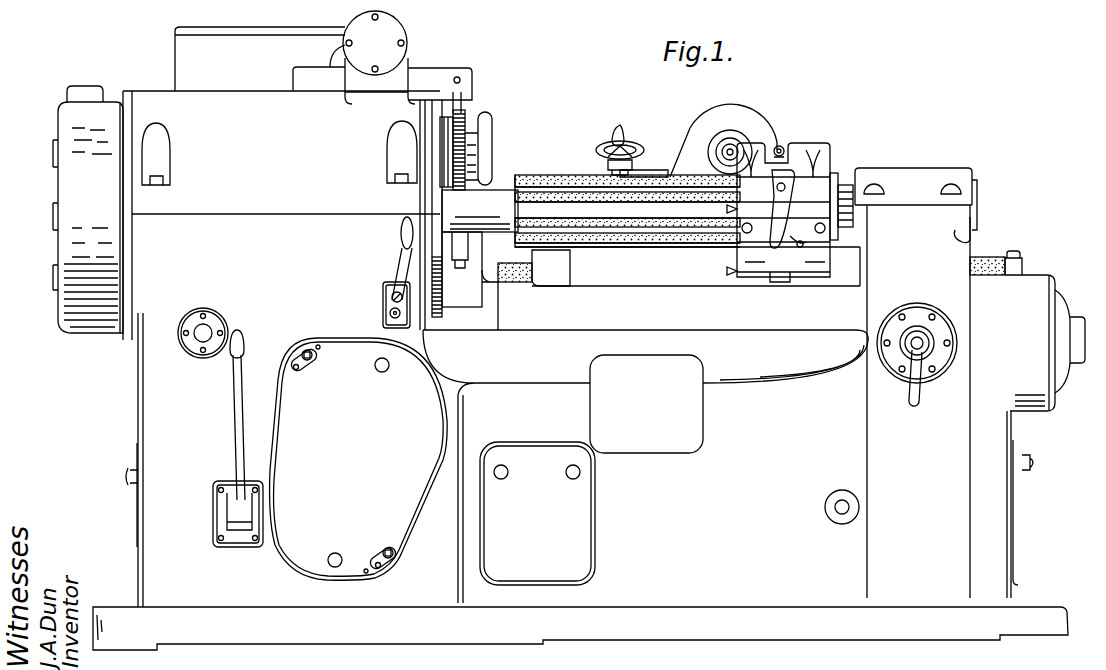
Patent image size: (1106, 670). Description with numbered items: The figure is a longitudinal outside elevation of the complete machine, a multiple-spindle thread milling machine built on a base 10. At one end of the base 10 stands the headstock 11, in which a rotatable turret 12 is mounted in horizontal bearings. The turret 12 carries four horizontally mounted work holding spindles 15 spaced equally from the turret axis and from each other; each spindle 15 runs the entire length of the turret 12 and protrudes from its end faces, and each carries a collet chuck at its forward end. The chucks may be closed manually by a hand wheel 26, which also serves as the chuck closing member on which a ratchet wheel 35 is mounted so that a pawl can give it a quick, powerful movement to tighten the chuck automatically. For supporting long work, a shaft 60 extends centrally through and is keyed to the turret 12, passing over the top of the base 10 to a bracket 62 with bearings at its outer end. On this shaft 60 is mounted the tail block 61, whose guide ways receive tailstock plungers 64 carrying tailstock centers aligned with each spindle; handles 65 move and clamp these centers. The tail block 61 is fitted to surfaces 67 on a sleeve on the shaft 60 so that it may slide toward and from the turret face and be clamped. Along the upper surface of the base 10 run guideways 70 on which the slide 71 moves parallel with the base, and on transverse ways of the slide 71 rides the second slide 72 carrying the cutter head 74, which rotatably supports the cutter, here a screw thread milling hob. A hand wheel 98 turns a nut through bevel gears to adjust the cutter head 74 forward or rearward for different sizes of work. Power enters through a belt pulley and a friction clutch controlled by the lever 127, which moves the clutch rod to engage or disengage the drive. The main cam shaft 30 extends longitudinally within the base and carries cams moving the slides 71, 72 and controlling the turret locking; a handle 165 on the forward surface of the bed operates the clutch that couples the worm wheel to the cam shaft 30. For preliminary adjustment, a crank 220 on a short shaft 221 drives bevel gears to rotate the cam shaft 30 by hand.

The base 10 is at (867, 447).
The headstock 11 is at (158, 94).
The turret 12 is at (444, 316).
The work holding spindles 15 is at (56, 163).
The hand wheel 26 is at (491, 133).
The main cam shaft 30 is at (1087, 322).
The ratchet wheel 35 is at (464, 120).
The shaft 60 is at (497, 188).
The tail block 61 is at (830, 165).
The bracket 62 is at (976, 231).
The tailstock plungers 64 is at (727, 208).
The handles 65 is at (781, 147).
The surfaces 67 is at (545, 176).
The guideways 70 is at (990, 260).
The slide 71 is at (651, 282).
The second slide 72 is at (556, 252).
The cutter head 74 is at (645, 172).
The hand wheel 98 is at (624, 140).
The lever 127 is at (234, 428).
The handle 165 is at (398, 270).
The crank 220 is at (919, 398).
The short shaft 221 is at (917, 338).